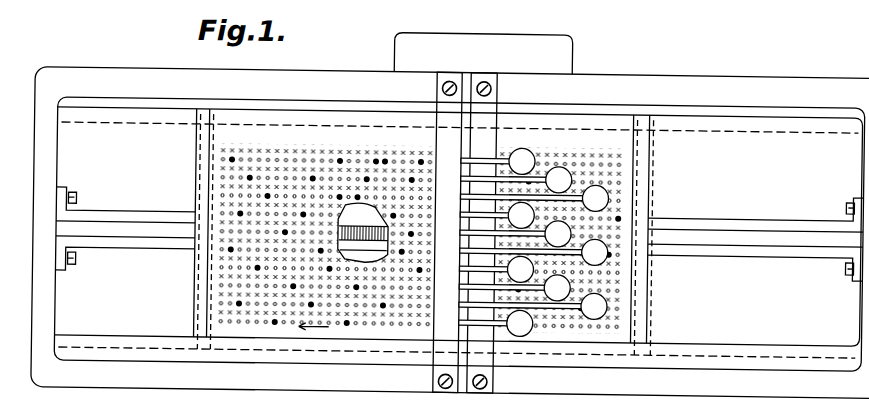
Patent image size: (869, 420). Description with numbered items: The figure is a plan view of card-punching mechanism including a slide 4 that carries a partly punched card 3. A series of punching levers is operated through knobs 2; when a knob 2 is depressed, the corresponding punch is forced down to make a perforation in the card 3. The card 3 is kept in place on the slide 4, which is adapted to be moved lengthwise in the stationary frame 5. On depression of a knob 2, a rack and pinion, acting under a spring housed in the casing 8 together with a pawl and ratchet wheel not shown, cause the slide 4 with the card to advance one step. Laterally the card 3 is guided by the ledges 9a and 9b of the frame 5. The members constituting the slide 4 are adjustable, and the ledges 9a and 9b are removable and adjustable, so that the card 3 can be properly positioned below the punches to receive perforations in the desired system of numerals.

The knobs 2 is at (532, 149).
The card 3 is at (325, 229).
The slide 4 is at (202, 282).
The stationary frame 5 is at (450, 233).
The casing 8 is at (483, 53).
The ledge 9a is at (168, 107).
The ledge 9b is at (115, 342).